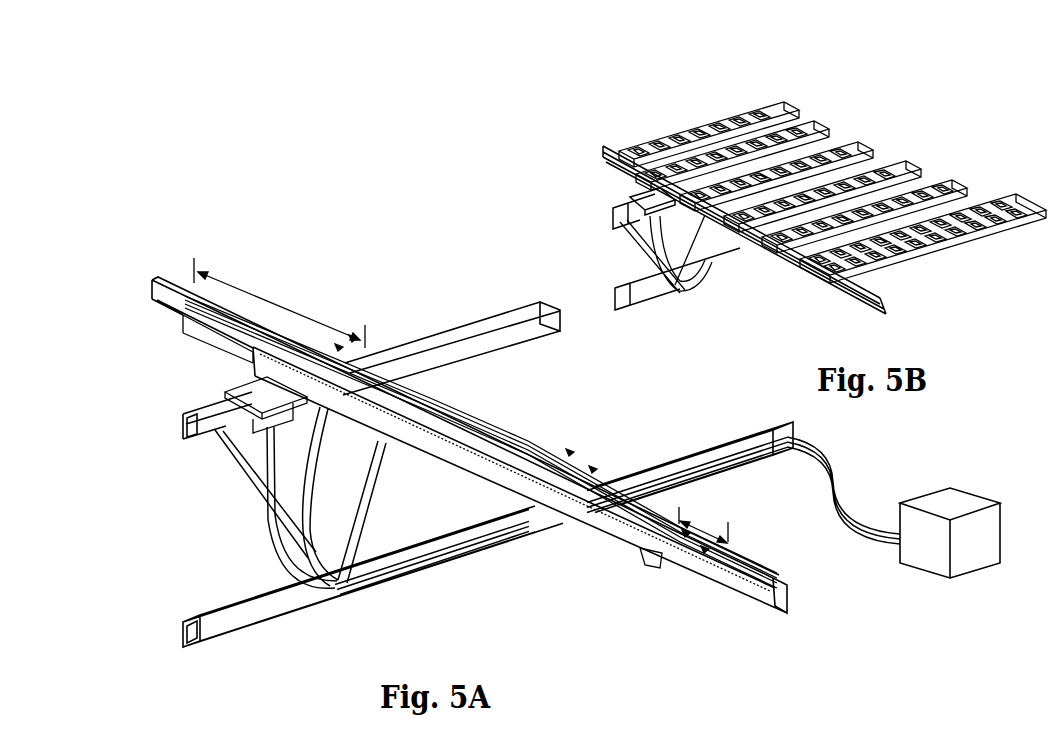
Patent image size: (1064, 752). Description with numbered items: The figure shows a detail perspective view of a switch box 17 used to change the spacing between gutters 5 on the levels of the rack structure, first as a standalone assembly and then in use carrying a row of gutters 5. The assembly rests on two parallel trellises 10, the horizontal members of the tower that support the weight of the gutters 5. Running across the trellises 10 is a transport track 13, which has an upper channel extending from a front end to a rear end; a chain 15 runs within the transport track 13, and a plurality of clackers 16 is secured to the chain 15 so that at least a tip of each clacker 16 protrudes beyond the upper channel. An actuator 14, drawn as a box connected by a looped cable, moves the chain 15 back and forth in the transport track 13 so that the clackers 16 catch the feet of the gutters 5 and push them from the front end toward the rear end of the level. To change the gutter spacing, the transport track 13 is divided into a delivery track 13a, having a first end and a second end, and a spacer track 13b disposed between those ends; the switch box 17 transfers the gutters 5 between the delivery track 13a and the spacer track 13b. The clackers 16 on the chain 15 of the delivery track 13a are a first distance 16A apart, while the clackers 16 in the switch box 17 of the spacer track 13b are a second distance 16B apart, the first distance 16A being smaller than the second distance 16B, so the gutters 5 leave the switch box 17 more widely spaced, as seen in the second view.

In FIG. 5B, the gutter 5 is at (832, 187).
In FIG. 5A, the trellis 10 is at (270, 619).
In FIG. 5B, the trellis 10 is at (658, 300).
In FIG. 5A, the transport track 13 is at (707, 583).
In FIG. 5B, the transport track 13 is at (845, 283).
In FIG. 5A, the delivery track 13a is at (298, 332).
In FIG. 5A, the spacer track 13b is at (580, 467).
In FIG. 5A, the actuator 14 is at (938, 503).
In FIG. 5A, the chain 15 is at (787, 598).
In FIG. 5A, the clacker 16 is at (185, 290).
In FIG. 5A, the first distance 16A is at (703, 530).
In FIG. 5B, the first distance 16A is at (988, 203).
In FIG. 5A, the second distance 16B is at (263, 302).
In FIG. 5B, the second distance 16B is at (797, 118).
In FIG. 5A, the switch box 17 is at (485, 437).